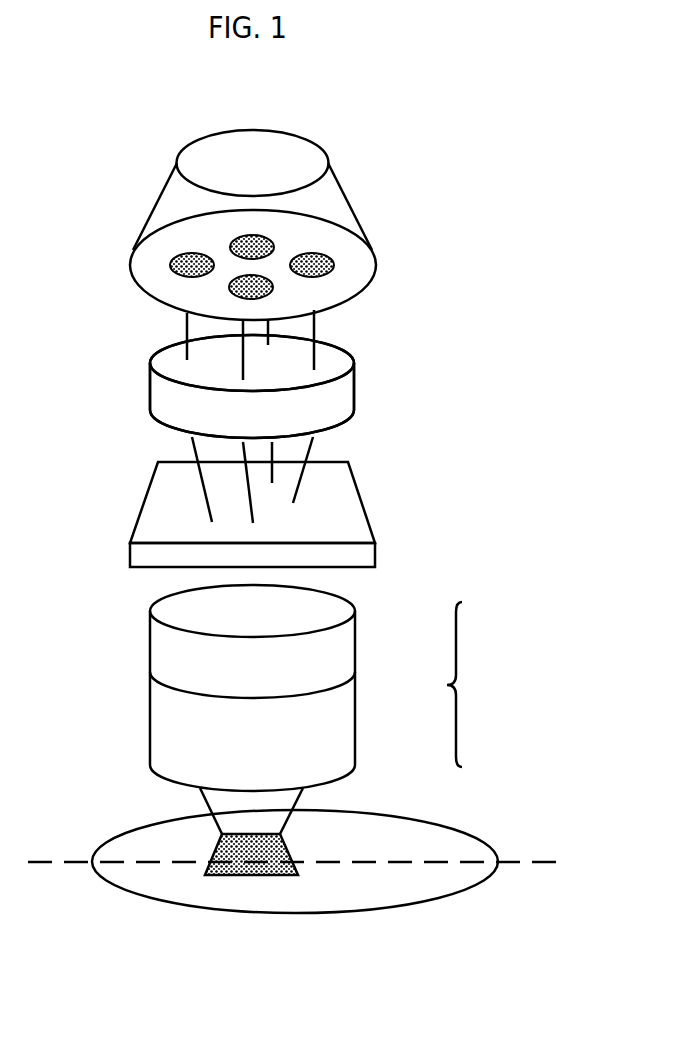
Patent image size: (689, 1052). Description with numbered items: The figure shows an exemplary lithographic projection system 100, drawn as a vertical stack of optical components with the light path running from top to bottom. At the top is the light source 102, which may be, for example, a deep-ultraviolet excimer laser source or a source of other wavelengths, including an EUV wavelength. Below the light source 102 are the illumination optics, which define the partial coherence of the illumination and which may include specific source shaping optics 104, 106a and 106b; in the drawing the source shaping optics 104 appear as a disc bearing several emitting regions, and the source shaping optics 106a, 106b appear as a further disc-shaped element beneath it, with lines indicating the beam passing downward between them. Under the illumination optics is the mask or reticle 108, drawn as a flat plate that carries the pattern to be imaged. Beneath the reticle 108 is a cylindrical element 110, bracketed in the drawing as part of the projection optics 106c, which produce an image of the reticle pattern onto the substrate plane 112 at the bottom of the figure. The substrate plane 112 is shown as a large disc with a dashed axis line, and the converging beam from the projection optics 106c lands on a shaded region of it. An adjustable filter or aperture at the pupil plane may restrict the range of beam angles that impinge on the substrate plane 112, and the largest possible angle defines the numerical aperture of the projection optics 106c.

The lithographic projection system 100 is at (120, 185).
The light source 102 is at (320, 146).
The source shaping optics 104 is at (363, 290).
The source shaping optics 106a is at (353, 385).
The source shaping optics 106b is at (252, 386).
The projection optics 106c is at (475, 684).
The mask or reticle 108 is at (338, 508).
The lens cylinder 110 is at (337, 687).
The substrate plane 112 is at (543, 860).